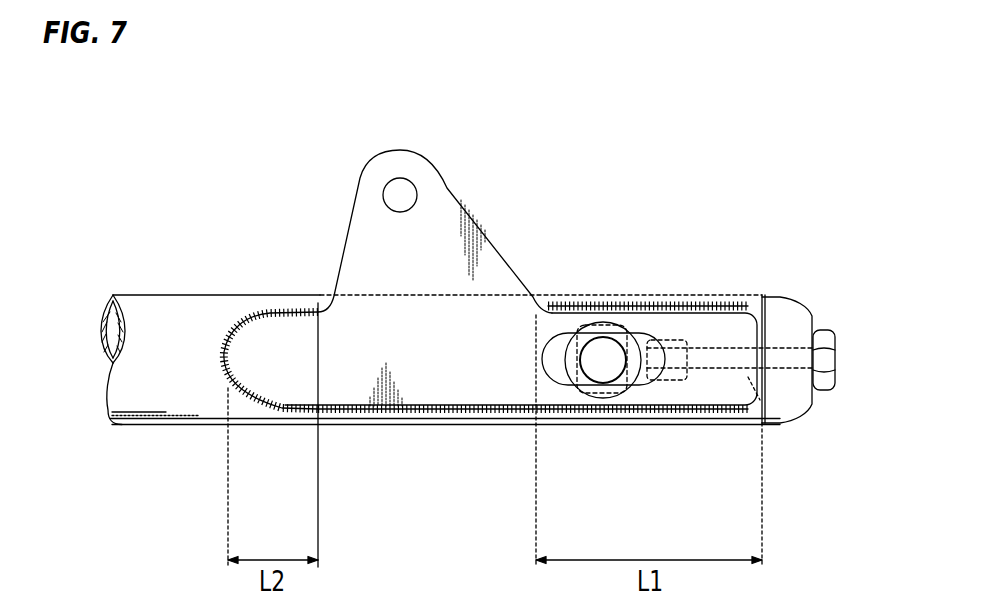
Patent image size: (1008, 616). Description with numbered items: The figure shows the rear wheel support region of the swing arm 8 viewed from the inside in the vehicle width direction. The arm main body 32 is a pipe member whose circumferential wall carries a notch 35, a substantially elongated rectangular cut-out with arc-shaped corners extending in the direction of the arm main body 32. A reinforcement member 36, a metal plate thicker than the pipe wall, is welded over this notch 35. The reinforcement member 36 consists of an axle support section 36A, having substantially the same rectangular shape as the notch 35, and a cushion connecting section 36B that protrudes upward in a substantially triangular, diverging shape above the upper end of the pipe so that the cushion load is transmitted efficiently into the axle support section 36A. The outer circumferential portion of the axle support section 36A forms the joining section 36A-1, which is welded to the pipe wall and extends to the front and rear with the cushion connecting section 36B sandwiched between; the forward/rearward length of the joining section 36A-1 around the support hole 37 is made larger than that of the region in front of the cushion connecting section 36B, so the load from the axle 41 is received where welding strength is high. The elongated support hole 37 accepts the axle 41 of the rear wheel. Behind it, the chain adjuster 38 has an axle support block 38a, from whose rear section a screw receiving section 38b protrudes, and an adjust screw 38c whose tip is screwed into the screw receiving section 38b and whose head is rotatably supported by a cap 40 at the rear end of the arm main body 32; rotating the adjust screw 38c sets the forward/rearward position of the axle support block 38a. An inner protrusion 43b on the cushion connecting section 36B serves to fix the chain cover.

The swing arm 8 is at (592, 141).
The arm main body 32 is at (172, 305).
The notch 35 is at (606, 318).
The reinforcement member 36 is at (436, 377).
The axle support section 36A is at (733, 330).
The joining section 36A-1 is at (278, 409).
The cushion connecting section 36B is at (440, 193).
The support hole 37 is at (554, 374).
The chain adjuster 38 is at (714, 345).
The axle support block 38a is at (634, 338).
The screw receiving section 38b is at (683, 338).
The adjust screw 38c is at (760, 400).
The cap 40 is at (805, 306).
The axle 41 is at (590, 383).
The inner protrusion 43b is at (394, 180).